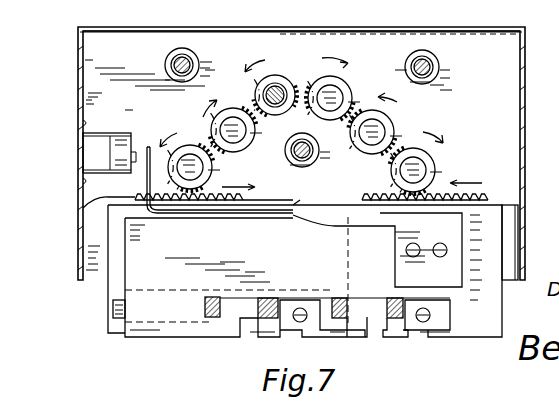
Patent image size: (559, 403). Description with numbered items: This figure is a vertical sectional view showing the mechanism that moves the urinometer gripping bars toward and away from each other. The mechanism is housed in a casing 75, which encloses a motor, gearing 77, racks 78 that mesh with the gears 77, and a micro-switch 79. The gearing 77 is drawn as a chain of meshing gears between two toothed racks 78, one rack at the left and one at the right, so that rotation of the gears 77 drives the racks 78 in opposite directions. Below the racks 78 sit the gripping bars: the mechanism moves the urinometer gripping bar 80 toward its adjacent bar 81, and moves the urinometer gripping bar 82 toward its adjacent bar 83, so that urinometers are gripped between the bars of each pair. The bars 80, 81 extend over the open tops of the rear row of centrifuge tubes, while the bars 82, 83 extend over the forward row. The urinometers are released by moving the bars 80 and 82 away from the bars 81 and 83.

The casing 75 is at (450, 27).
The gearing 77 is at (415, 124).
The racks 78 is at (133, 196).
The micro-switch 79 is at (112, 154).
The urinometer gripping bar 80 is at (212, 297).
The adjacent bar 81 is at (270, 298).
The urinometer gripping bar 82 is at (337, 298).
The adjacent bar 83 is at (392, 298).